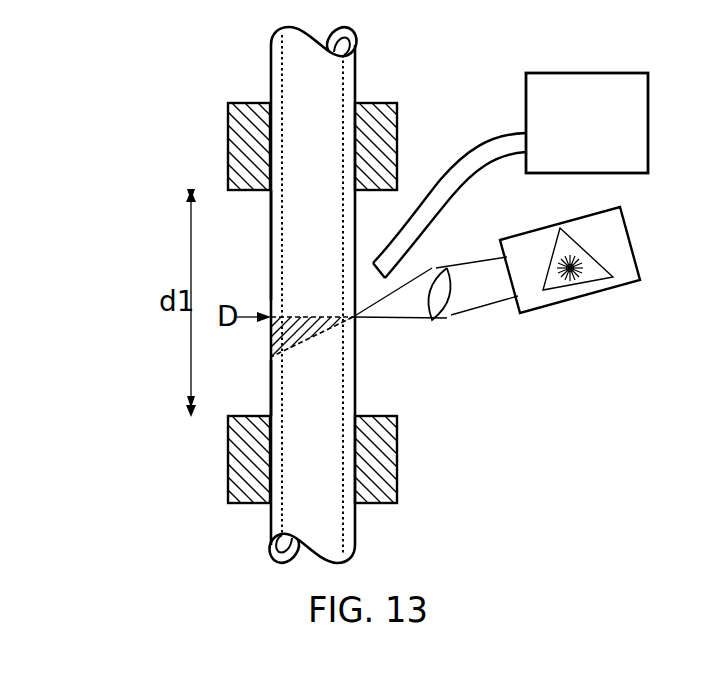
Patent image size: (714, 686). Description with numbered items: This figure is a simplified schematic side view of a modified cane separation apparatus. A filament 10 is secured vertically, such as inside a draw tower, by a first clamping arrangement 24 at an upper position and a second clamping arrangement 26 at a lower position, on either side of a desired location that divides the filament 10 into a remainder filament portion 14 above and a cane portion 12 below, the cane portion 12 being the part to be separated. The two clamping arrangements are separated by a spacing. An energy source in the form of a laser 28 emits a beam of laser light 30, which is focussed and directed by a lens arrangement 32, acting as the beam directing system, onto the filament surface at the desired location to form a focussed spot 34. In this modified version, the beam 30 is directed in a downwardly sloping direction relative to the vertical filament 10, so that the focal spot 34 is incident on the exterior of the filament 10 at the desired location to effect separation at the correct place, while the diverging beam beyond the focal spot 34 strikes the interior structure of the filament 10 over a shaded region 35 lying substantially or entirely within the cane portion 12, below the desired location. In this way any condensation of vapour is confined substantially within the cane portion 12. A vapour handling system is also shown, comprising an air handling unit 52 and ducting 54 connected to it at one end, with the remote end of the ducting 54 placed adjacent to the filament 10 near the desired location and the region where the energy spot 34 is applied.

The filament 10 is at (271, 57).
The cane portion 12 is at (271, 395).
The remainder filament portion 14 is at (271, 240).
The first clamping arrangement 24 is at (228, 127).
The second clamping arrangement 26 is at (228, 467).
The laser 28 is at (570, 299).
The beam of laser light 30 is at (487, 304).
The lens arrangement 32 is at (447, 320).
The focussed spot 34 is at (355, 320).
The region within the cane portion 35 is at (271, 333).
The air handling unit 52 is at (555, 73).
The ducting 54 is at (488, 138).